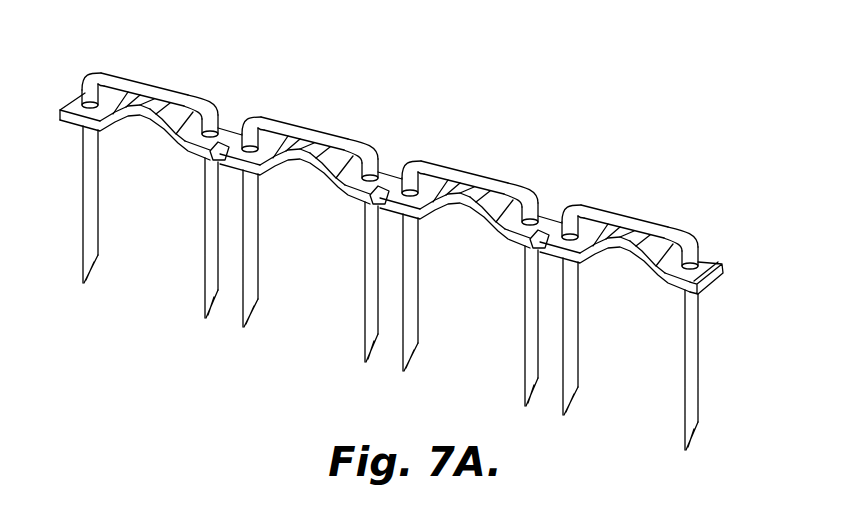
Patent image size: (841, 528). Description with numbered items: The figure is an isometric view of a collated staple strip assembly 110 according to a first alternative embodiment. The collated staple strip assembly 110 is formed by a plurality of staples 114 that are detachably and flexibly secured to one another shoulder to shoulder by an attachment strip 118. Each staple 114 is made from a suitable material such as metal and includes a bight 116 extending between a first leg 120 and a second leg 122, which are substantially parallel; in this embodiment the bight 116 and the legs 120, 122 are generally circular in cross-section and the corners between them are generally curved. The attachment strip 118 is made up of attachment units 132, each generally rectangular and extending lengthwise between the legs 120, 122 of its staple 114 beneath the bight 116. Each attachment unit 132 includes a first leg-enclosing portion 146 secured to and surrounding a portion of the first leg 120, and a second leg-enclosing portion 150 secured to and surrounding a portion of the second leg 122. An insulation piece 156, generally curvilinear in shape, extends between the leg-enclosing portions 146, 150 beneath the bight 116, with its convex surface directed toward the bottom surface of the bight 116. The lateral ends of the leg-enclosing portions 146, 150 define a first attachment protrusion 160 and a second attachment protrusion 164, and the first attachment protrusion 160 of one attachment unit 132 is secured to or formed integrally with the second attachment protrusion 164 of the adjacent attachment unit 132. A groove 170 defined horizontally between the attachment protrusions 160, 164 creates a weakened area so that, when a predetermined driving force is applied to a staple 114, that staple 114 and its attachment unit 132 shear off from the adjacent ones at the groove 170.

The collated staple strip assembly 110 is at (404, 242).
The staple 114 is at (369, 288).
The bight 116 is at (140, 83).
The attachment strip 118 is at (723, 251).
The first leg 120 is at (100, 246).
The second leg 122 is at (89, 292).
The attachment unit 132 is at (130, 134).
The first leg-enclosing portion 146 is at (75, 123).
The second leg-enclosing portion 150 is at (192, 158).
The insulation piece 156 is at (182, 118).
The first attachment protrusion 160 is at (78, 104).
The second attachment protrusion 164 is at (226, 140).
The groove 170 is at (213, 140).